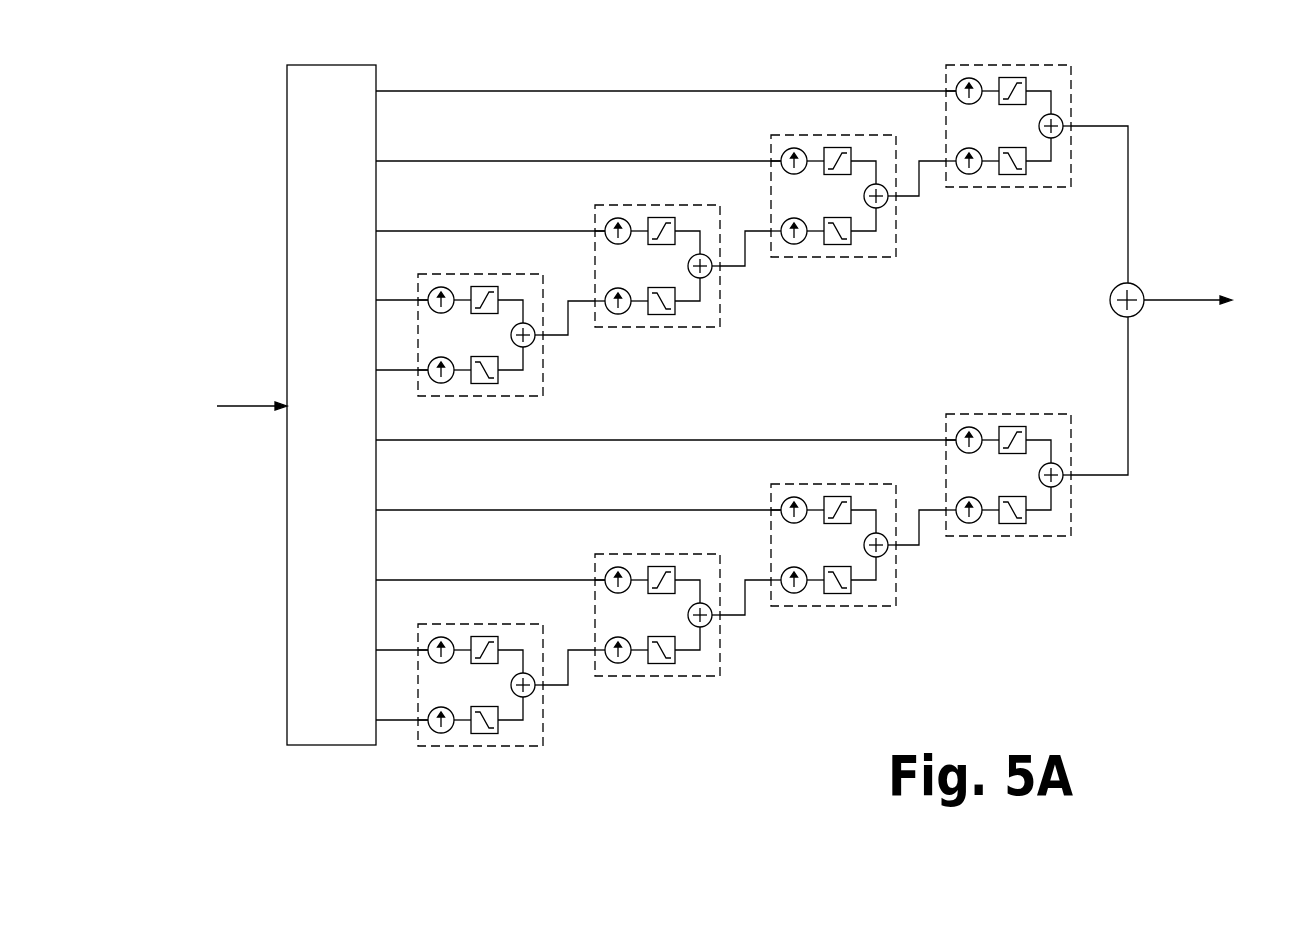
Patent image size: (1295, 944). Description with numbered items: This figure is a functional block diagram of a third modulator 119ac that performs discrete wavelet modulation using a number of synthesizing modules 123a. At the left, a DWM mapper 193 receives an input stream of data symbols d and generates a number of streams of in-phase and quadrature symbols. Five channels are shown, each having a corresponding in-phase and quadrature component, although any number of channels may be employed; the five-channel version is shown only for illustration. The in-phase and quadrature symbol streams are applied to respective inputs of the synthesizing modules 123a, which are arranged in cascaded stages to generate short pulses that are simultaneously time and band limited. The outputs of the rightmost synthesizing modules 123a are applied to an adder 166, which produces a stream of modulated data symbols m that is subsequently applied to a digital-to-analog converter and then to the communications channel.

The third modulator 119ac is at (1102, 632).
The DWM mapper 193 is at (280, 673).
The synthesizing module 123a is at (1076, 85).
The adder 166 is at (1140, 282).